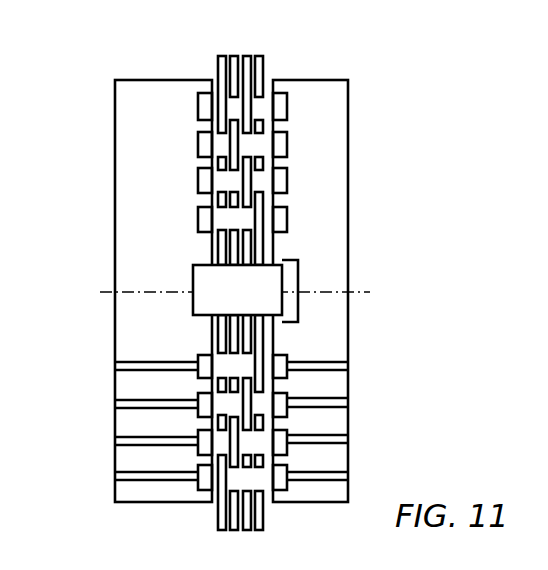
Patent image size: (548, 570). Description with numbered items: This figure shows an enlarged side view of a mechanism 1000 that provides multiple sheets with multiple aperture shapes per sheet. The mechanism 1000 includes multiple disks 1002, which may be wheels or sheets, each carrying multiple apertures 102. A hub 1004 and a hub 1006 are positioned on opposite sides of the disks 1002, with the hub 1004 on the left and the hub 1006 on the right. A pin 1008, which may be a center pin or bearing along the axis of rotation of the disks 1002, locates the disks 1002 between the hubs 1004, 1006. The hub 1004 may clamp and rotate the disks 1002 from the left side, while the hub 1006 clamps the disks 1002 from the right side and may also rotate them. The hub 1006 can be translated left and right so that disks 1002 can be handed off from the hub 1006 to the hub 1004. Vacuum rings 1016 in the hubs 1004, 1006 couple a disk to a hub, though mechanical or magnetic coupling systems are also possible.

The mechanism 1000 is at (115, 58).
The disks 1002 is at (220, 56).
The apertures 102 is at (260, 104).
The hub 1004 is at (128, 195).
The hub 1006 is at (338, 190).
The pin 1008 is at (282, 277).
The vacuum rings 1016 is at (115, 363).